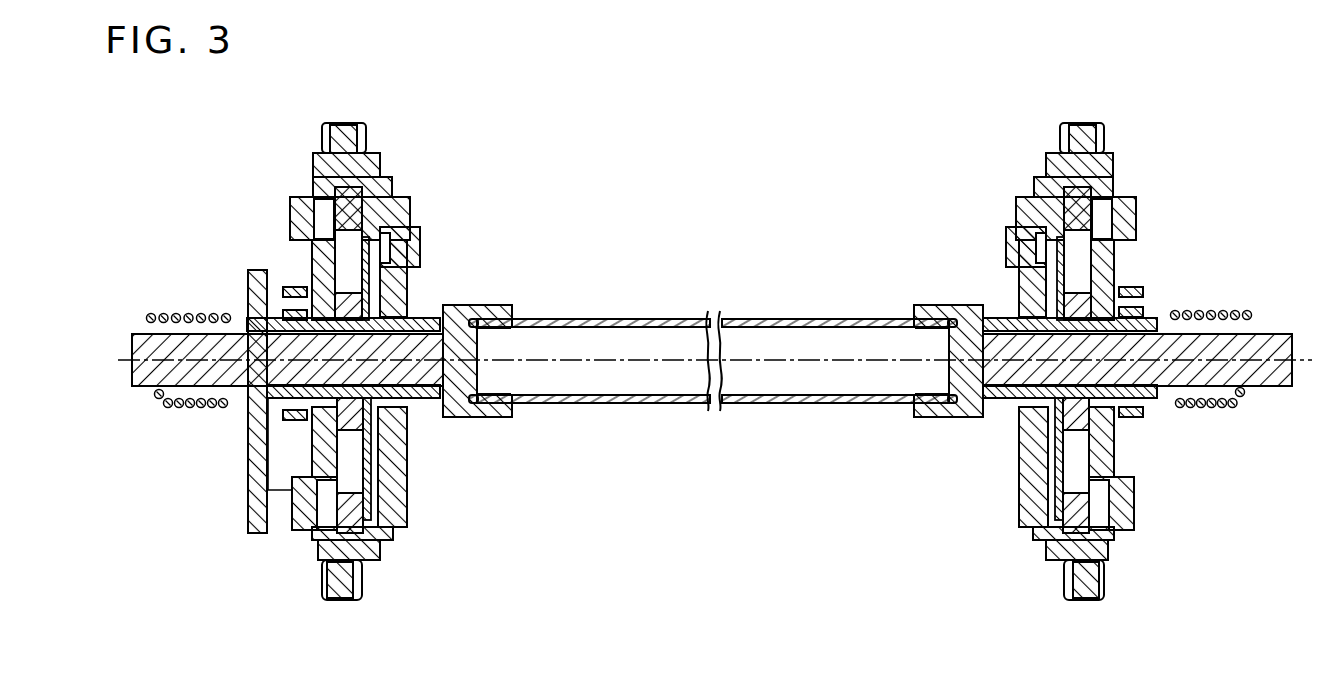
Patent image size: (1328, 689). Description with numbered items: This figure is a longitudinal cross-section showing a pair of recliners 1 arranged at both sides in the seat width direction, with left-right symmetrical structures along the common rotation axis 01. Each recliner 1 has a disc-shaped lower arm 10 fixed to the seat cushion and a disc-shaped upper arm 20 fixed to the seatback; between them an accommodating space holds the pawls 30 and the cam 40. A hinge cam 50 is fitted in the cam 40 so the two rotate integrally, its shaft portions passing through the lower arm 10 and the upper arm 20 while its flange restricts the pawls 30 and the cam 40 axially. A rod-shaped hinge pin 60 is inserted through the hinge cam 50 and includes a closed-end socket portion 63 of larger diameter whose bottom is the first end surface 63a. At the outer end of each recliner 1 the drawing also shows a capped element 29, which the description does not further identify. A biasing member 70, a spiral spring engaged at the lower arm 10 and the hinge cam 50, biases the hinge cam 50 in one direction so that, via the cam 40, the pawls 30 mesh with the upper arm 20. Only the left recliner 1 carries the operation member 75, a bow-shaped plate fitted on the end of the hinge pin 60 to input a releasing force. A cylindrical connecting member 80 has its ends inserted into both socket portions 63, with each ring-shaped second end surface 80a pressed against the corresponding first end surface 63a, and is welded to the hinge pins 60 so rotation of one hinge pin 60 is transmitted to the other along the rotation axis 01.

The recliner 1 is at (469, 170).
The lower arm 10 is at (291, 213).
The upper arm 20 is at (421, 246).
The cap 29 is at (343, 121).
The pawl 30 is at (338, 224).
The cam 40 is at (370, 300).
The hinge cam 50 is at (283, 306).
The hinge pin 60 is at (134, 352).
The socket portion 63 is at (504, 305).
The first end surface 63a is at (485, 338).
The biasing member 70 is at (287, 428).
The operation member 75 is at (248, 492).
The connecting member 80 is at (623, 318).
The second end surface 80a is at (472, 310).
The rotation axis 01 is at (761, 358).